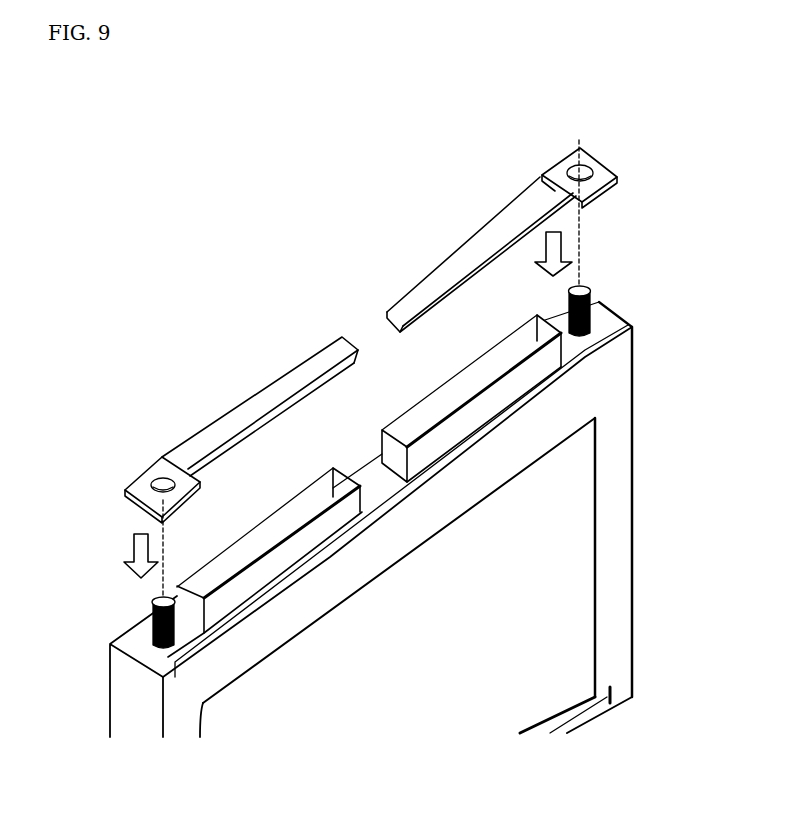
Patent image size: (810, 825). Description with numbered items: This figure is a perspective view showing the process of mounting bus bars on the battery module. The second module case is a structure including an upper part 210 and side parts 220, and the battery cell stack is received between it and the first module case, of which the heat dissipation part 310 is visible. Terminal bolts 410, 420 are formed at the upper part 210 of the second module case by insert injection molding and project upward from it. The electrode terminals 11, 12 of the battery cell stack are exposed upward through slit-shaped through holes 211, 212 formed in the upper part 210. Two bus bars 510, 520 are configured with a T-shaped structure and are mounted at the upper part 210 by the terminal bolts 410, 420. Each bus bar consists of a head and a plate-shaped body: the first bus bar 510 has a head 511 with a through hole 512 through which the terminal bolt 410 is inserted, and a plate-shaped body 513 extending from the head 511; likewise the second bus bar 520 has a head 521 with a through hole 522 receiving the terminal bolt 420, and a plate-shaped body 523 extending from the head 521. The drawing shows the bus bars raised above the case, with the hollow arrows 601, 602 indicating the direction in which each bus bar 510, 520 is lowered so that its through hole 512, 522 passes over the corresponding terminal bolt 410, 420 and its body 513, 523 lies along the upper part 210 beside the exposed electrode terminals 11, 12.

The electrode terminal 11 is at (270, 567).
The electrode terminal 12 is at (445, 390).
The upper part 210 is at (607, 313).
The slit-shaped through hole 211 is at (370, 494).
The slit-shaped through hole 212 is at (386, 473).
The side part 220 is at (613, 532).
The heat dissipation part 310 is at (560, 613).
The terminal bolt 410 is at (150, 603).
The terminal bolt 420 is at (590, 284).
The bus bar 510 is at (194, 439).
The head 511 is at (147, 470).
The through hole 512 is at (177, 462).
The plate-shaped body 513 is at (260, 404).
The bus bar 520 is at (548, 223).
The head 521 is at (562, 164).
The through hole 522 is at (590, 198).
The plate-shaped body 523 is at (480, 240).
The insertion direction arrow 601 is at (130, 548).
The insertion direction arrow 602 is at (537, 263).